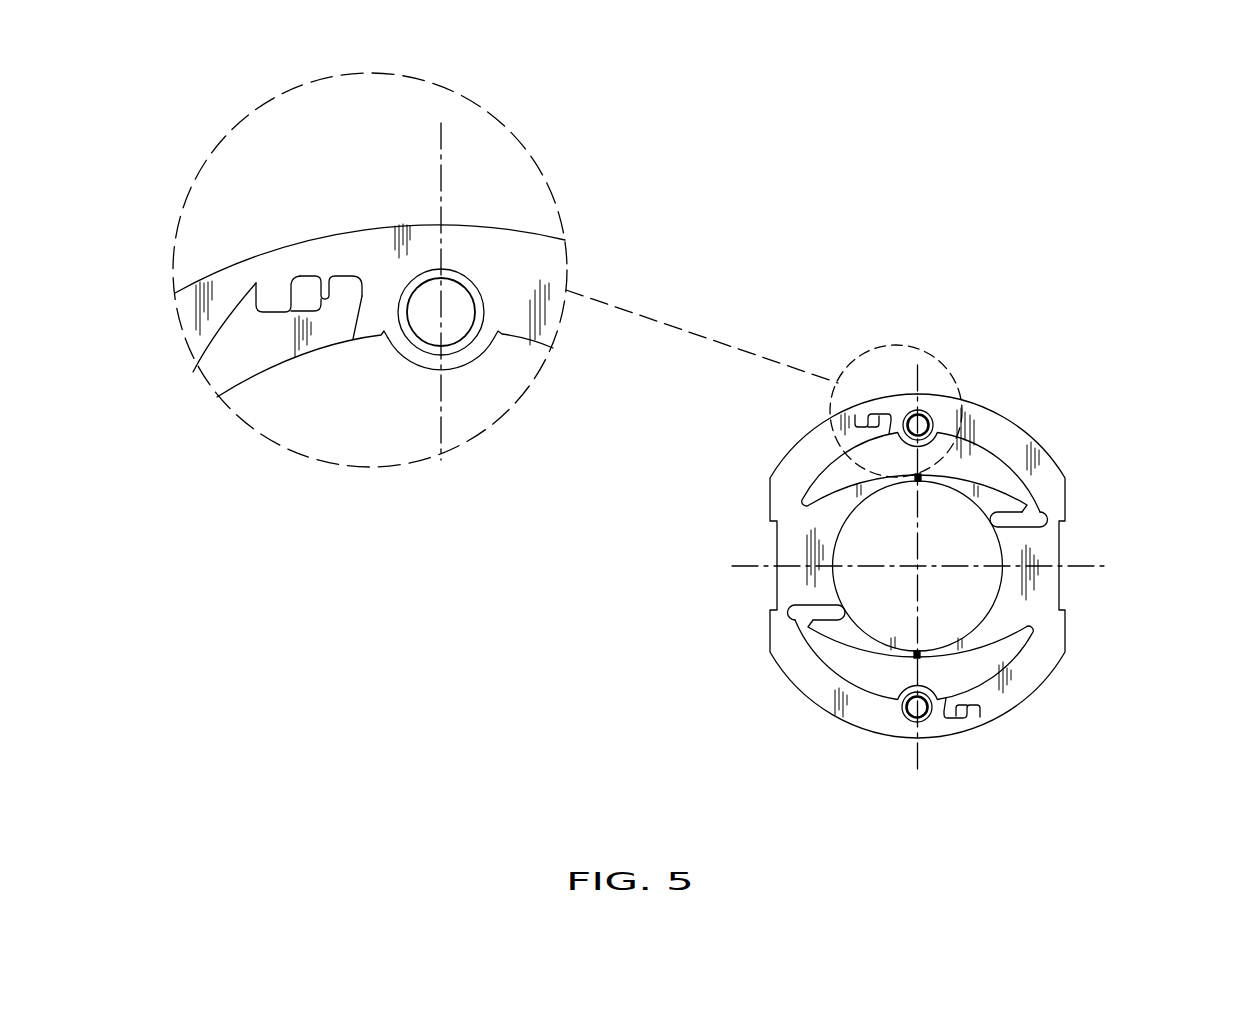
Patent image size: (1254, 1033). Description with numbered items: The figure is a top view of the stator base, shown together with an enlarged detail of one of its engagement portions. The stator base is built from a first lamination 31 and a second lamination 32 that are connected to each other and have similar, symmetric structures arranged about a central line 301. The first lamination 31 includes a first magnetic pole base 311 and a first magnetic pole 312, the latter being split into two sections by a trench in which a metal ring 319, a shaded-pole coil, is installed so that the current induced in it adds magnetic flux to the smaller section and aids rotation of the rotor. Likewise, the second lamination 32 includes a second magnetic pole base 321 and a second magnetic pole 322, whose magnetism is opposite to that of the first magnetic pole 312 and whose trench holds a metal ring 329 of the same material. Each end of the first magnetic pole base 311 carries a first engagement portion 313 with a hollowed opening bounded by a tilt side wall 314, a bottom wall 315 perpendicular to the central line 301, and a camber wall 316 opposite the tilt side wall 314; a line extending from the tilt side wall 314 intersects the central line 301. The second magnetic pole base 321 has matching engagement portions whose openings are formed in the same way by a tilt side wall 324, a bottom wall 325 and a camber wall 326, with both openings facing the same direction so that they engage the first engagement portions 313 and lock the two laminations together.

The first lamination 31 is at (1122, 547).
The second lamination 32 is at (903, 555).
The central line 301 is at (925, 378).
The first magnetic pole base 311 is at (1065, 632).
The first magnetic pole 312 is at (987, 647).
The metal ring 319 is at (1068, 483).
The second magnetic pole base 321 is at (773, 583).
The second magnetic pole 322 is at (875, 655).
The metal ring 329 is at (793, 612).
The first engagement portion 313 is at (278, 240).
The tilt side wall 314 is at (363, 294).
The bottom wall 315 is at (322, 278).
The camber wall 316 is at (293, 282).
The tilt side wall 324 is at (203, 366).
The bottom wall 325 is at (300, 350).
The camber wall 326 is at (323, 309).